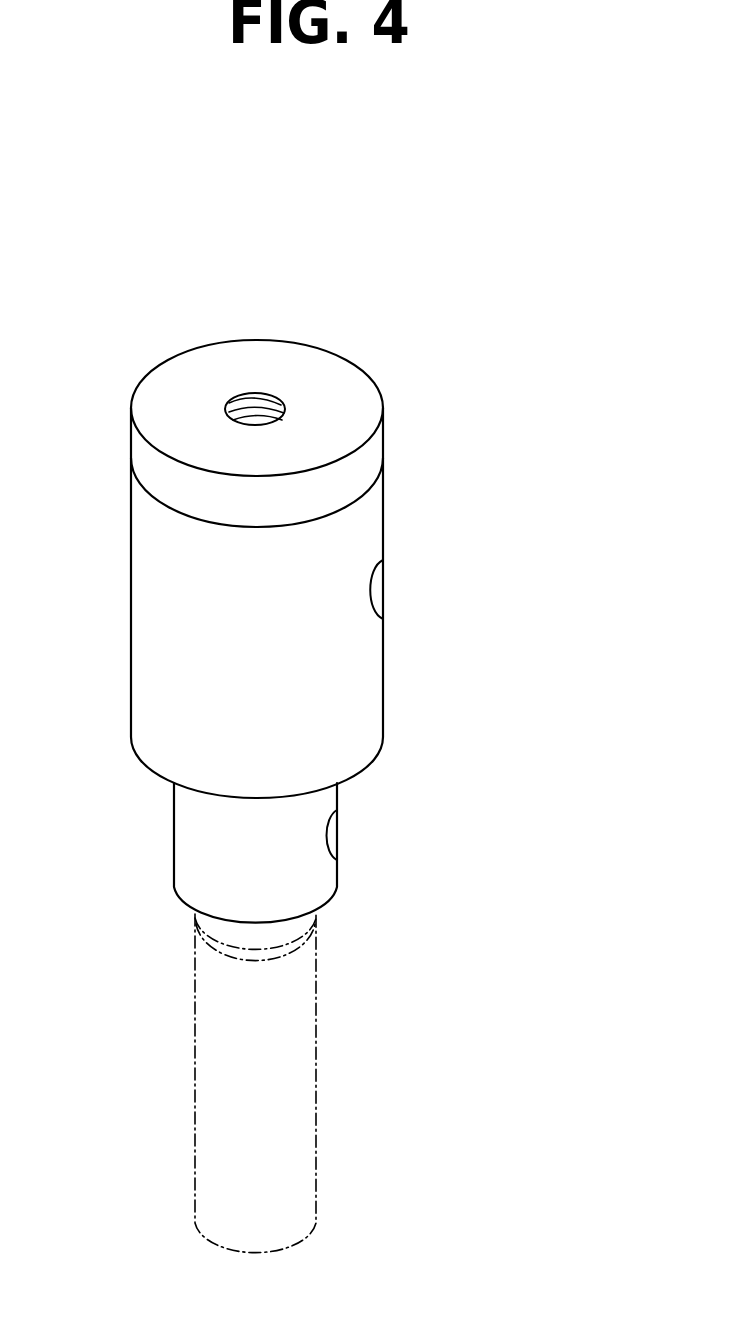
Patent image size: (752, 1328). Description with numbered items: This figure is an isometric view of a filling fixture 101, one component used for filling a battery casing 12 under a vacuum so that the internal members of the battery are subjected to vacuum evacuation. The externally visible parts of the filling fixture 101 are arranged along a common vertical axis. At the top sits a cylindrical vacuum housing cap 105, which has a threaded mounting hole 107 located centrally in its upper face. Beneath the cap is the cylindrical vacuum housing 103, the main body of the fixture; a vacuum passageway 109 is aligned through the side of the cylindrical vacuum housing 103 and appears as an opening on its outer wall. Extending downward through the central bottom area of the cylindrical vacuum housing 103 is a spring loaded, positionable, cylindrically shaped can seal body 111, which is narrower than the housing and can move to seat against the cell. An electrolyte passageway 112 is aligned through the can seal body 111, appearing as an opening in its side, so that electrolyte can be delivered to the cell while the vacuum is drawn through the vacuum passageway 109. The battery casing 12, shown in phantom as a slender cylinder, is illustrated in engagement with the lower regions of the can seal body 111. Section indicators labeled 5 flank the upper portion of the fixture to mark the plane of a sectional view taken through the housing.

The filling fixture 101 is at (510, 495).
The cylindrical vacuum housing 103 is at (160, 608).
The cylindrical vacuum housing cap 105 is at (160, 480).
The threaded mounting hole 107 is at (253, 410).
The vacuum passageway 109 is at (376, 596).
The can seal body 111 is at (194, 841).
The electrolyte passageway 112 is at (340, 835).
The battery casing 12 is at (318, 1007).
The section line 5 is at (48, 383).